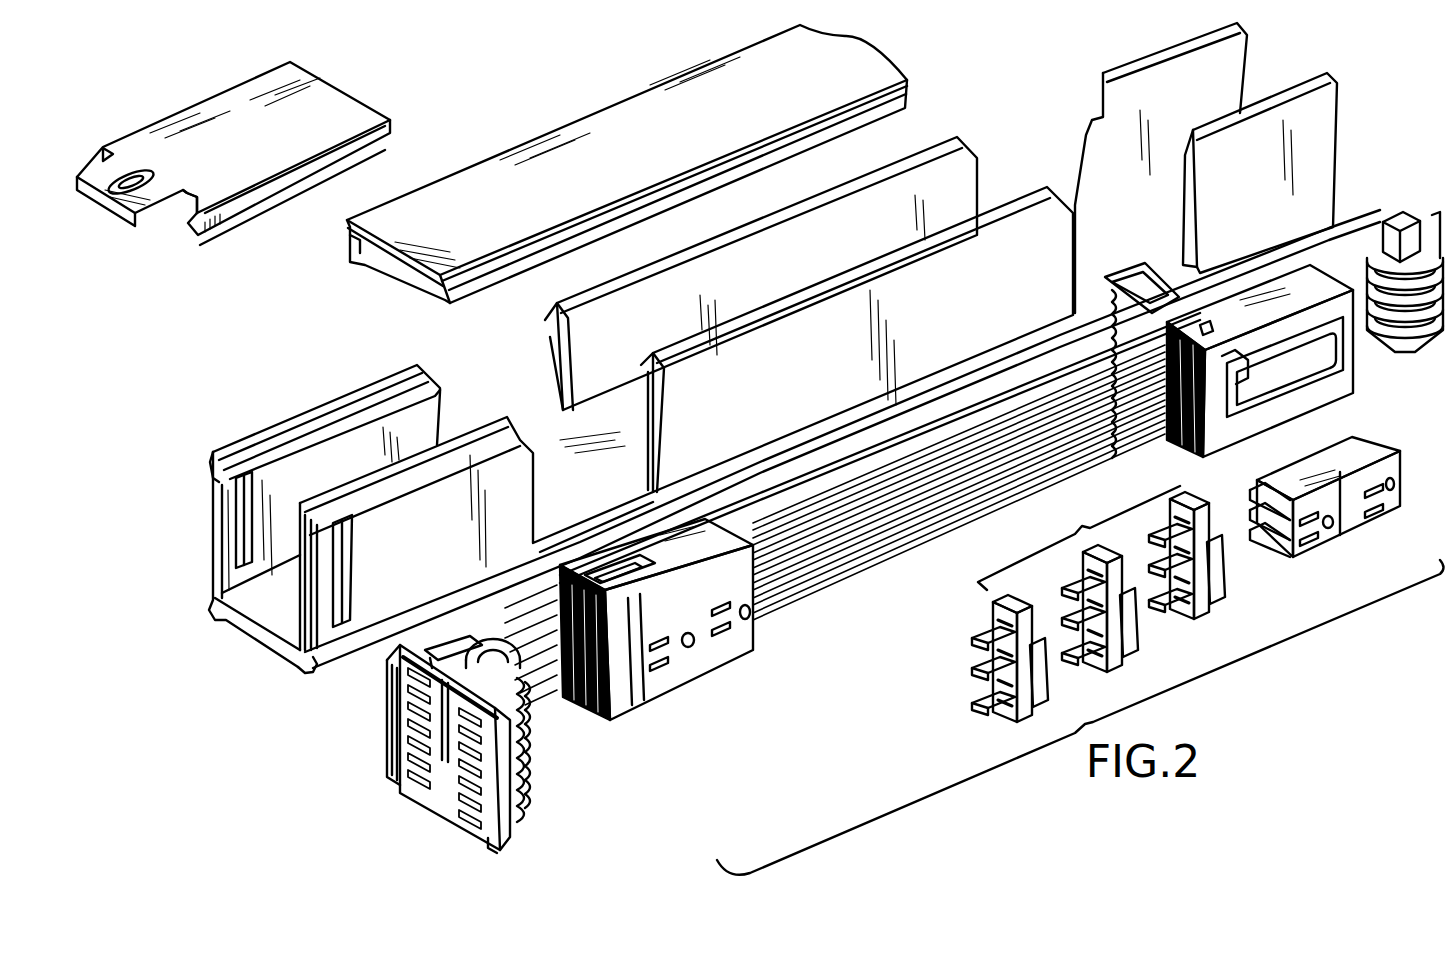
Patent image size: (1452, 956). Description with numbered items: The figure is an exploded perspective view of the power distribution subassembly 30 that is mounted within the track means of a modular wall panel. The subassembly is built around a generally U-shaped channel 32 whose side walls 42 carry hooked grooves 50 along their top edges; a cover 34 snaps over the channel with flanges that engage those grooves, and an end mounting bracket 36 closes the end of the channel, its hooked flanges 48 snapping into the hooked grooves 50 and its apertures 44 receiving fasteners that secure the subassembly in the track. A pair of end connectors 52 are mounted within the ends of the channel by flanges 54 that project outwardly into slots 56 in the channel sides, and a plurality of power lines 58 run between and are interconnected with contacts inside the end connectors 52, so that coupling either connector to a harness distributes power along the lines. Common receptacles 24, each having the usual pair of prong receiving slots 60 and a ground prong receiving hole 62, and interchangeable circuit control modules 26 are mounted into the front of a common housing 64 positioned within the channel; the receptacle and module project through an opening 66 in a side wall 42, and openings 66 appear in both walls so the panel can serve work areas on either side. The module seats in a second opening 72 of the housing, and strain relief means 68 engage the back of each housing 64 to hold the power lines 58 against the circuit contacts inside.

The receptacle 24 is at (695, 640).
The circuit control module 26 is at (637, 703).
The power distribution subassembly 30 is at (566, 95).
The U-shaped channel 32 is at (333, 668).
The cover 34 is at (865, 70).
The end mounting bracket 36 is at (231, 112).
The side wall 42 is at (764, 286).
The aperture 44 is at (137, 176).
The hooked flange 48 is at (236, 213).
The hooked groove 50 is at (212, 467).
The end connector 52 is at (1393, 215).
The flange 54 is at (386, 733).
The slot 56 is at (352, 580).
The power line 58 is at (872, 495).
The prong receiving slot 60 is at (663, 657).
The ground prong receiving hole 62 is at (705, 637).
The housing 64 is at (1290, 278).
The opening 66 is at (977, 187).
The strain relief means 68 is at (546, 586).
The second opening 72 is at (1233, 363).